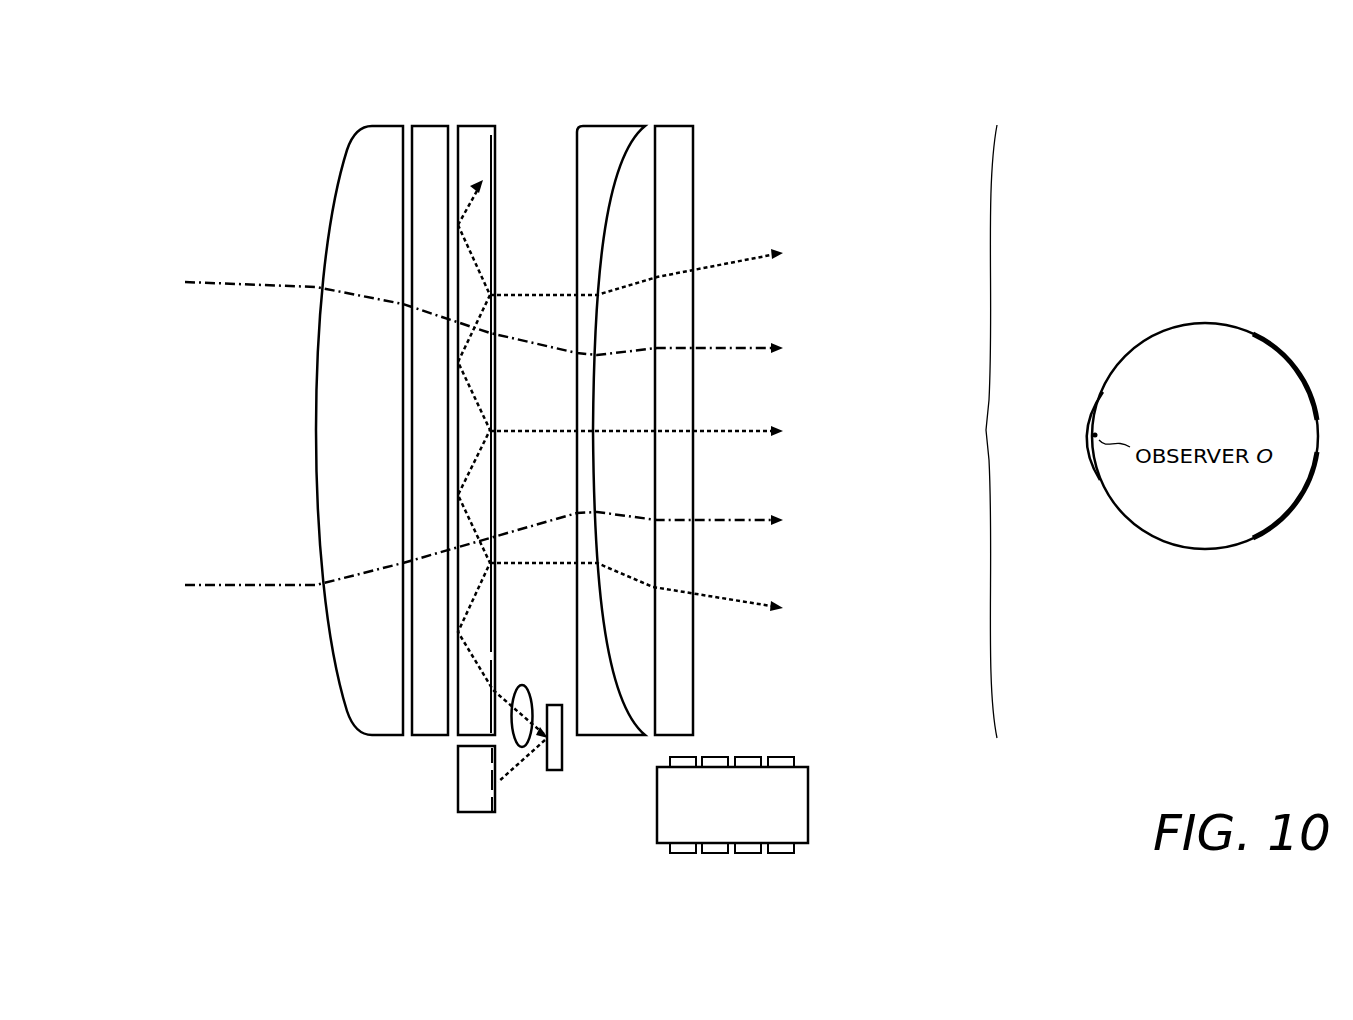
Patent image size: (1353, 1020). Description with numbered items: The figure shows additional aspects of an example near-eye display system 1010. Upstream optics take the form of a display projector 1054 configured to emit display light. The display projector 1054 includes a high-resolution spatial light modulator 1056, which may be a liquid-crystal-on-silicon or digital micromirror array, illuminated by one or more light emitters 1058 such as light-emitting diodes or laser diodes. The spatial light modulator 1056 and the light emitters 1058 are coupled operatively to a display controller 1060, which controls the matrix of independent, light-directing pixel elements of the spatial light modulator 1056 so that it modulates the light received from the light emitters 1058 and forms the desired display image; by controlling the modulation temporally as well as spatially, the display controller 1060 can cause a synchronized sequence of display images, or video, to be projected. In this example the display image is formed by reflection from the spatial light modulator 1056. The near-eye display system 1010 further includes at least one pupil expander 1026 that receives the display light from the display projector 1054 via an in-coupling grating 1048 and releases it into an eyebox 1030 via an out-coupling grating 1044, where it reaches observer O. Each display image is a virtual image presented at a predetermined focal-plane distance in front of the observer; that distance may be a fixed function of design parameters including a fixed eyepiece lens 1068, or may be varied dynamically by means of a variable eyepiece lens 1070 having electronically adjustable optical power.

The near-eye display system 1010 is at (208, 151).
The pupil expander 1026 is at (480, 125).
The out-coupling grating 1044 is at (497, 192).
The in-coupling grating 1048 is at (498, 672).
The display projector 1054 is at (579, 798).
The spatial light modulator 1056 is at (563, 766).
The light emitters 1058 is at (493, 782).
The display controller 1060 is at (758, 817).
The fixed eyepiece lens 1068 is at (607, 126).
The variable eyepiece lens 1070 is at (677, 126).
The eyebox 1030 is at (963, 431).